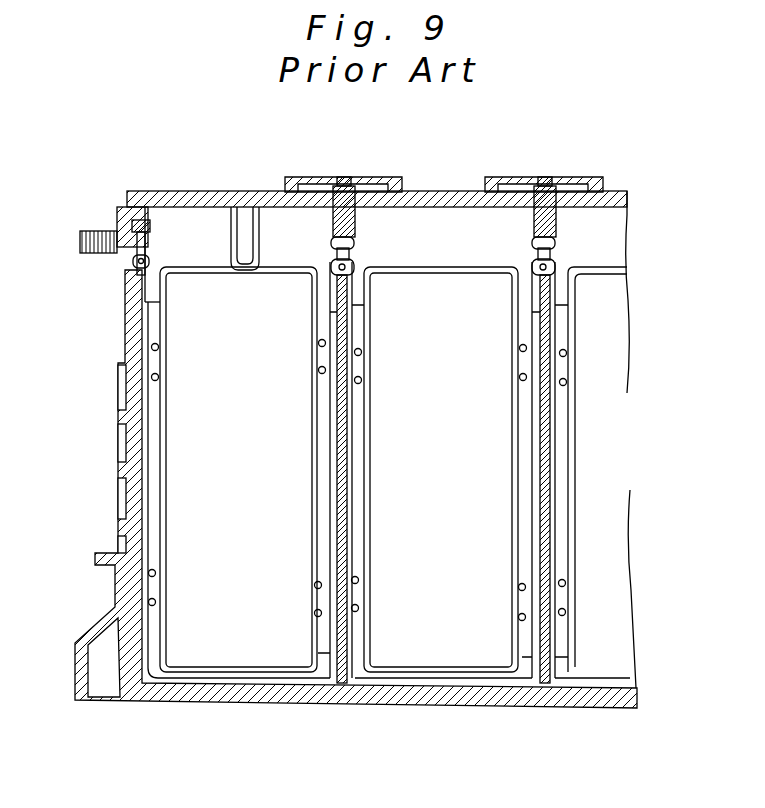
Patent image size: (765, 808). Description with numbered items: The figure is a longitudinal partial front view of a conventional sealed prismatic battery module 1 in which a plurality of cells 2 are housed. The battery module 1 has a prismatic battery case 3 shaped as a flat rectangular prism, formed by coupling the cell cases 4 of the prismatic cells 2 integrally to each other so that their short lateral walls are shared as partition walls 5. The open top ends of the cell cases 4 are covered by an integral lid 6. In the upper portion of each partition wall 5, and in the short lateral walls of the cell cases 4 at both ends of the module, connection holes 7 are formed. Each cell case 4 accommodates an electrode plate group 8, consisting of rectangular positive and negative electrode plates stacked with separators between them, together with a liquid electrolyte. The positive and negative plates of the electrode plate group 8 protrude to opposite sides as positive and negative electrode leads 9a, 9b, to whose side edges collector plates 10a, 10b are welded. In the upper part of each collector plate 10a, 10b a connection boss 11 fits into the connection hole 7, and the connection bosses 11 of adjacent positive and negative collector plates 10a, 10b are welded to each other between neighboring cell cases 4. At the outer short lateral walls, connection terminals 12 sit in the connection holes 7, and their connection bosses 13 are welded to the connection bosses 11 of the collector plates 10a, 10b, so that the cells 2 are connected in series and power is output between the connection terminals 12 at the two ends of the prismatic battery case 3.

The battery module 1 is at (136, 163).
The cell 2 is at (145, 683).
The prismatic battery case 3 is at (116, 444).
The cell case 4 is at (214, 253).
The partition wall 5 is at (344, 318).
The lid 6 is at (181, 190).
The connection hole 7 is at (118, 262).
The electrode plate group 8 is at (244, 422).
The positive electrode lead 9a is at (358, 436).
The negative electrode lead 9b is at (320, 441).
The positive collector plate 10a is at (350, 458).
The negative collector plate 10b is at (345, 469).
The connection boss 11 is at (147, 241).
The connection terminal 12 is at (95, 225).
The connection boss of connection terminal 13 is at (135, 240).